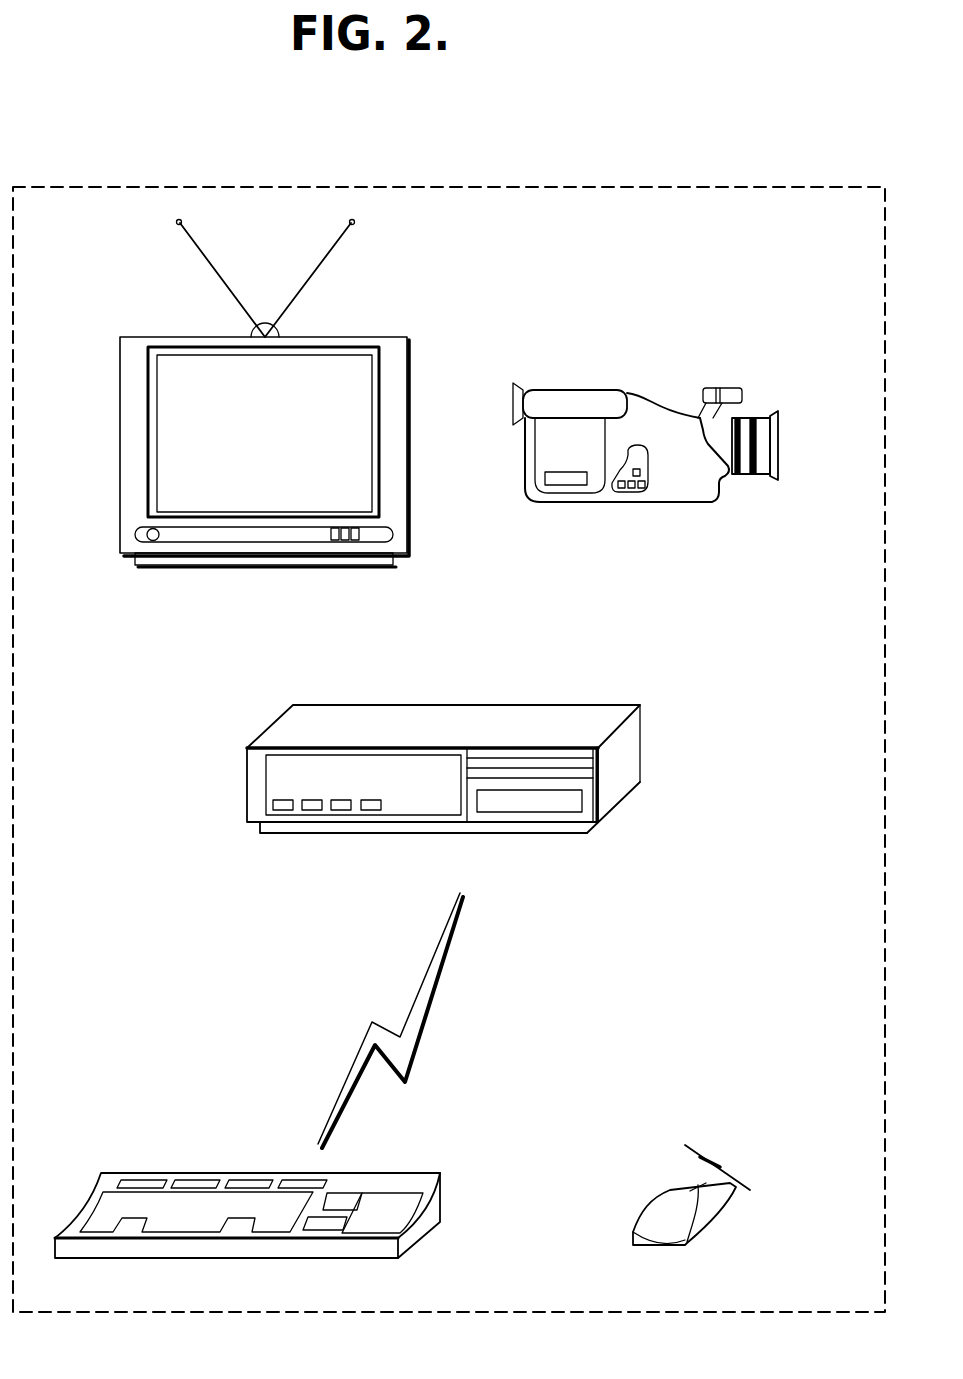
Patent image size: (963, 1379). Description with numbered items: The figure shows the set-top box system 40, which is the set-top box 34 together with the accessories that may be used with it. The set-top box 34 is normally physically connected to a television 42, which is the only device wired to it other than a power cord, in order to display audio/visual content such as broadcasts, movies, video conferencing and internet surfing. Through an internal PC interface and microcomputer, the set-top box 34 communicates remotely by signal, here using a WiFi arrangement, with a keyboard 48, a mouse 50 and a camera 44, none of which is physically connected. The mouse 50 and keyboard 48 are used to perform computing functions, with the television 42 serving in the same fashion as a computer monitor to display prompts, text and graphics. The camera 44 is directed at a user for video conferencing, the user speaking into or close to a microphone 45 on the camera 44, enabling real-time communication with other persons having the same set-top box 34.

The set-top box system 40 is at (138, 98).
The television 42 is at (353, 338).
The camera 44 is at (597, 390).
The microphone 45 is at (720, 390).
The set-top box 34 is at (522, 705).
The keyboard 48 is at (197, 1173).
The mouse 50 is at (636, 1222).